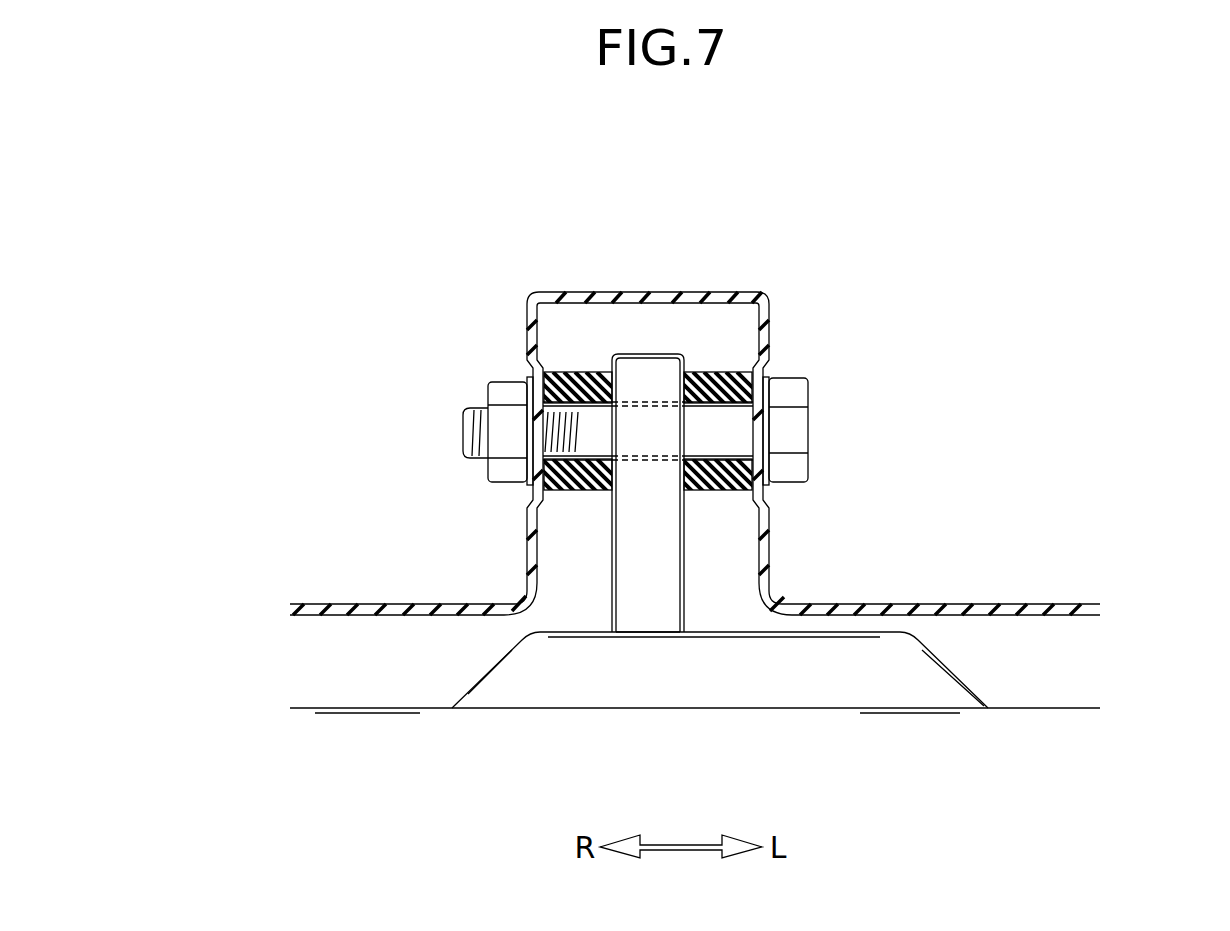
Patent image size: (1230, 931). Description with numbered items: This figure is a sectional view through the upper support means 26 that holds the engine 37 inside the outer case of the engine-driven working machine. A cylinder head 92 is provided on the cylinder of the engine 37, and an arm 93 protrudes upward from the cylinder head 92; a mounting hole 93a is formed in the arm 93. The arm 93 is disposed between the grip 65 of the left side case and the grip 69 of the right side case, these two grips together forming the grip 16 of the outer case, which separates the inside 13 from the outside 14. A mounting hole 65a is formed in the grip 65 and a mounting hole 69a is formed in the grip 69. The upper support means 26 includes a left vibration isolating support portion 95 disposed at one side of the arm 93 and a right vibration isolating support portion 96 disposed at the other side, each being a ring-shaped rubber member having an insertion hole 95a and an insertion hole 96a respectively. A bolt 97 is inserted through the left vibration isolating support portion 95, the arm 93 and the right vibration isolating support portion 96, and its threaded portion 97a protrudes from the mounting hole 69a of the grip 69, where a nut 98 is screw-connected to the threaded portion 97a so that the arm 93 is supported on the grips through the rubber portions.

The inside 13 is at (663, 793).
The outside 14 is at (160, 522).
The grip 16 is at (613, 192).
The upper support means 26 is at (798, 362).
The engine 37 is at (1042, 760).
The grip 65 is at (697, 292).
The mounting hole 65a is at (763, 457).
The grip 69 is at (615, 292).
The mounting hole 69a is at (536, 452).
The cylinder head 92 is at (897, 650).
The arm 93 is at (641, 372).
The mounting hole 93a is at (640, 464).
The left vibration isolating support portion 95 is at (716, 385).
The insertion hole 95a is at (705, 464).
The right vibration isolating support portion 96 is at (573, 385).
The insertion hole 96a is at (590, 464).
The bolt 97 is at (790, 428).
The threaded portion 97a is at (460, 432).
The nut 98 is at (505, 395).